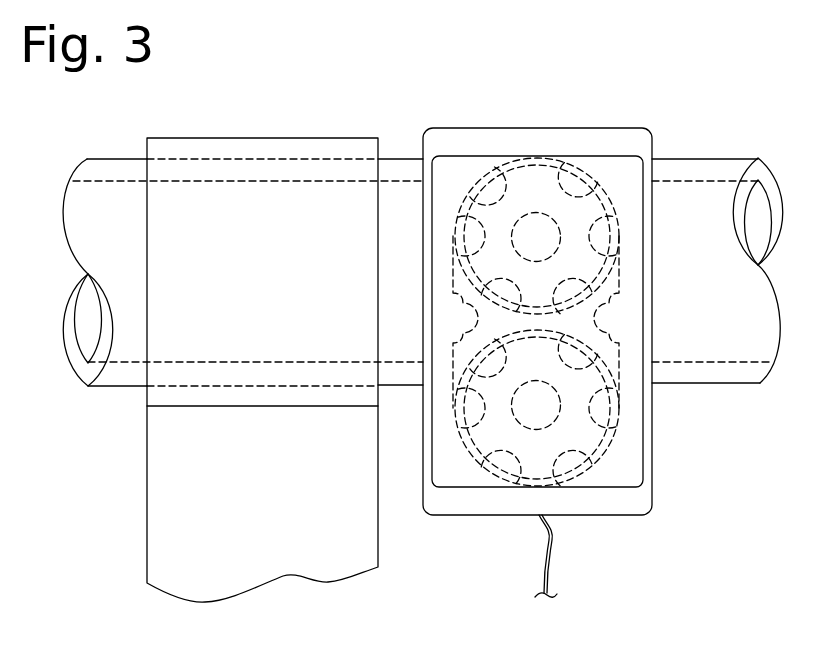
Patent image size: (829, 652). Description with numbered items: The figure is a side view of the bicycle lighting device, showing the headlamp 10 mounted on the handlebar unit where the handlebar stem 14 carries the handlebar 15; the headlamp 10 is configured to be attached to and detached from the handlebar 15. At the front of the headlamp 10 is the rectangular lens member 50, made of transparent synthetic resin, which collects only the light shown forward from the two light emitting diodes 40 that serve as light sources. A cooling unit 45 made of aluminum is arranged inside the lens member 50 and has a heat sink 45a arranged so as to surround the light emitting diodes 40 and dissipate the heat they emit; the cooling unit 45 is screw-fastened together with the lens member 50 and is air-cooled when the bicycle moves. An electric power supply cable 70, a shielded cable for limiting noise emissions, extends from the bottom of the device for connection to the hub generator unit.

The headlamp 10 is at (597, 302).
The handlebar stem 14 is at (306, 138).
The handlebar 15 is at (728, 158).
The light emitting diodes 40 is at (550, 214).
The cooling unit 45 is at (597, 183).
The heat sink 45a is at (500, 193).
The lens member 50 is at (501, 515).
The electric power supply cable 70 is at (545, 568).